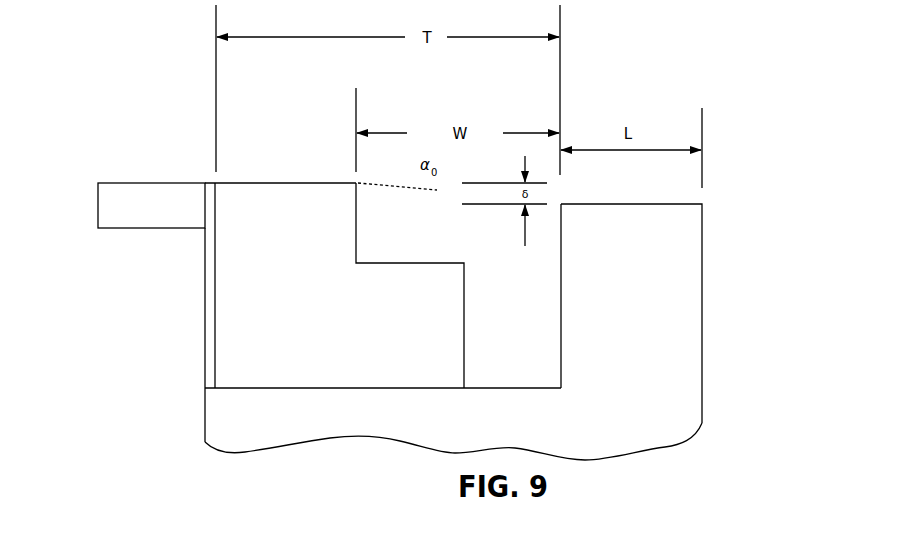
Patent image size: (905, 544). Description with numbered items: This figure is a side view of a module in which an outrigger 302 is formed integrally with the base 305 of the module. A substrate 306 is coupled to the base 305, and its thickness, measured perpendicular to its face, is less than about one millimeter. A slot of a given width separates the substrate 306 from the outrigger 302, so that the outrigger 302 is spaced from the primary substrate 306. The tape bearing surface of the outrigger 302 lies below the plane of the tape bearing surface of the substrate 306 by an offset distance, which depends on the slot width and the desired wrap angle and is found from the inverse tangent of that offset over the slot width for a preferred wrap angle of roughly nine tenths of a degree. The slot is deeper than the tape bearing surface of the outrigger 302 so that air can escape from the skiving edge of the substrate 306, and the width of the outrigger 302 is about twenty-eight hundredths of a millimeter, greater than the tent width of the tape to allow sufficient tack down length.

The outrigger 302 is at (705, 212).
The base 305 is at (703, 422).
The substrate 306 is at (256, 338).